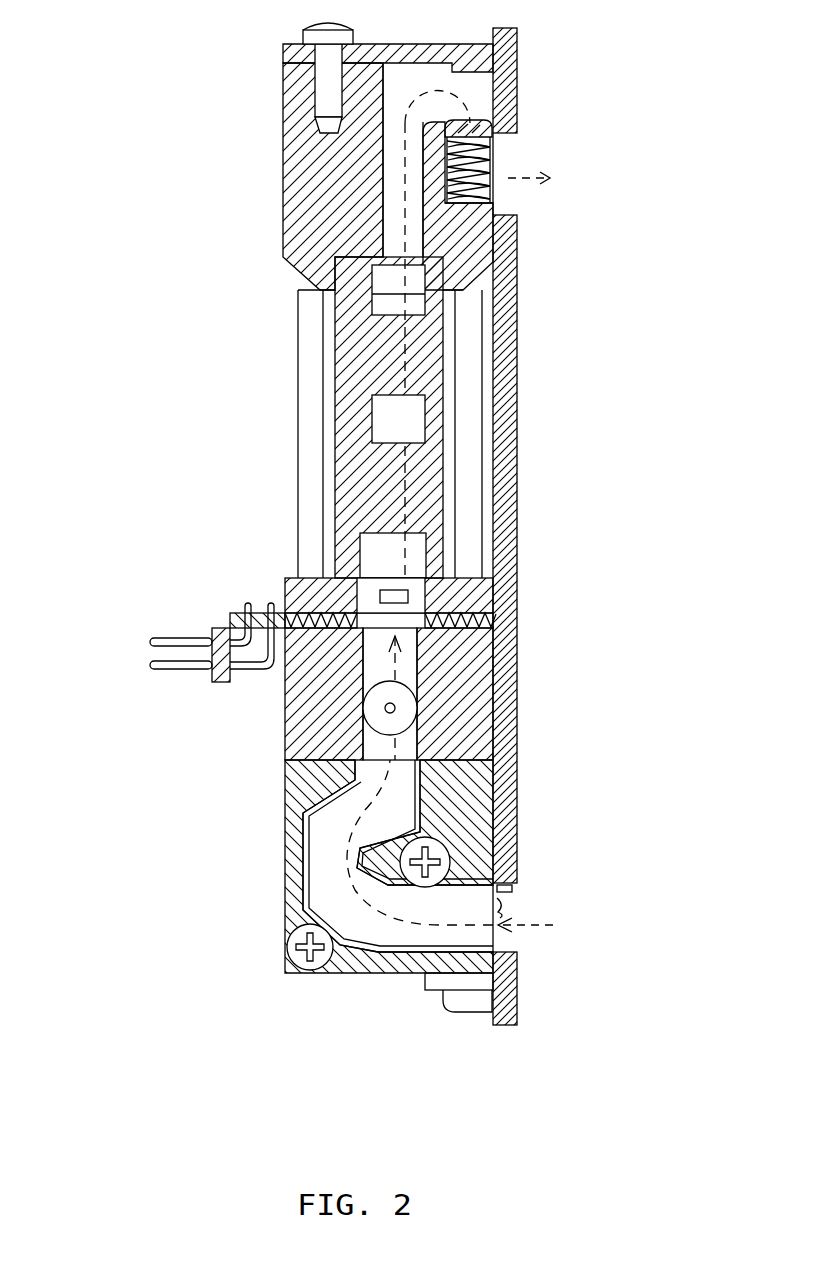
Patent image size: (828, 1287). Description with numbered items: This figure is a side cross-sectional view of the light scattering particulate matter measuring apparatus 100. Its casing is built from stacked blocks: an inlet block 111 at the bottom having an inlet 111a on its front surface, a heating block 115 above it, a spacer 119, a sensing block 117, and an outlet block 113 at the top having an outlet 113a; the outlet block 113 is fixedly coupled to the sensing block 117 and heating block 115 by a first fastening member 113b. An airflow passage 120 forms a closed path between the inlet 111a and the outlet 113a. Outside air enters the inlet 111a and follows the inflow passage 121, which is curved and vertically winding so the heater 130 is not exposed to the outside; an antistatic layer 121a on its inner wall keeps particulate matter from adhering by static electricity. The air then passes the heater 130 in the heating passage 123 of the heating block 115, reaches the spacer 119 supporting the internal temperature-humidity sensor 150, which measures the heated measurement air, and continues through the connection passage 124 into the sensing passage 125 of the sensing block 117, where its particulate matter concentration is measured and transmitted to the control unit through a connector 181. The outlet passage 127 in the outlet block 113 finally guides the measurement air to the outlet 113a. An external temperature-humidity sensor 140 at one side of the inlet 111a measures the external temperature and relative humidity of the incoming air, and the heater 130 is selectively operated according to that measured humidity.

The light scattering particulate matter measuring apparatus 100 is at (130, 102).
The outlet block 113 is at (285, 112).
The outlet 113a is at (492, 140).
The first fastening member 113b is at (480, 120).
The sensing block 117 is at (455, 515).
The outlet passage 127 is at (383, 187).
The sensing passage 125 is at (372, 420).
The connection passage 124 is at (300, 590).
The heating passage 123 is at (360, 760).
The inflow passage 121 is at (310, 850).
The airflow passage 120 is at (361, 507).
The spacer 119 is at (493, 590).
The internal temperature-humidity sensor 150 is at (360, 592).
The connector 181 is at (175, 643).
The heating block 115 is at (470, 698).
The heater 130 is at (388, 708).
The inlet block 111 is at (483, 790).
The external temperature-humidity sensor 140 is at (517, 888).
The antistatic layer 121a is at (303, 898).
The inlet 111a is at (500, 908).